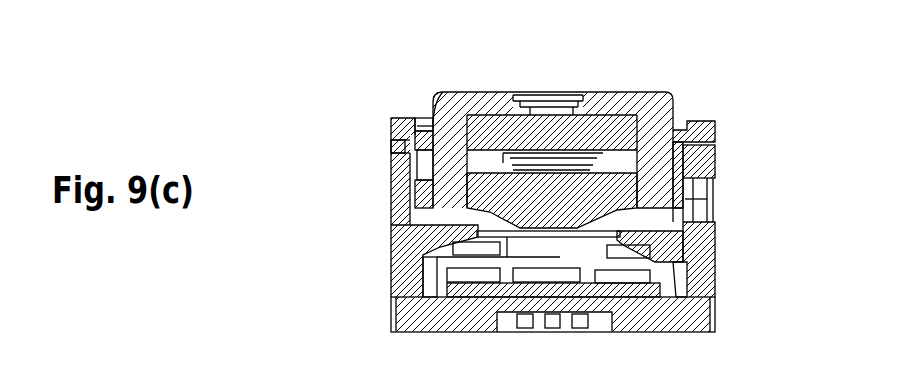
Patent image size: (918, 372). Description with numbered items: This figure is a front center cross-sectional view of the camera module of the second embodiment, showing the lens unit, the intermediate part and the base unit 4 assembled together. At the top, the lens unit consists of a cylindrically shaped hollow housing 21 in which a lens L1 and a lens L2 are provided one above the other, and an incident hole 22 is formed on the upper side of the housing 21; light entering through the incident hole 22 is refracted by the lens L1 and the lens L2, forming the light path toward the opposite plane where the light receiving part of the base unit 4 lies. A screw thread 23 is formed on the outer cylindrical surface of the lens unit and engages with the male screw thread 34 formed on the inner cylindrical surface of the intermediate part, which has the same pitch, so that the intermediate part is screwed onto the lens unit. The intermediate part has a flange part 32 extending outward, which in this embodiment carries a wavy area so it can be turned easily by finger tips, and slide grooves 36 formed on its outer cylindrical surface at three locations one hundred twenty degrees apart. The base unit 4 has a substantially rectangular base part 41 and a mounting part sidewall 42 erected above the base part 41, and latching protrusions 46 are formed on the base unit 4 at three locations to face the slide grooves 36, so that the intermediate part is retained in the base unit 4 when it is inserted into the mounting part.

The base unit 4 is at (732, 296).
The housing 21 is at (450, 98).
The incident hole 22 is at (563, 97).
The screw thread 23 is at (437, 127).
The flange part 32 is at (703, 120).
The male screw thread 34 is at (418, 165).
The slide groove 36 is at (413, 151).
The base part 41 is at (400, 313).
The mounting part sidewall 42 is at (400, 204).
The latching protrusion 46 is at (690, 156).
The lens L1 is at (497, 123).
The lens L2 is at (610, 194).